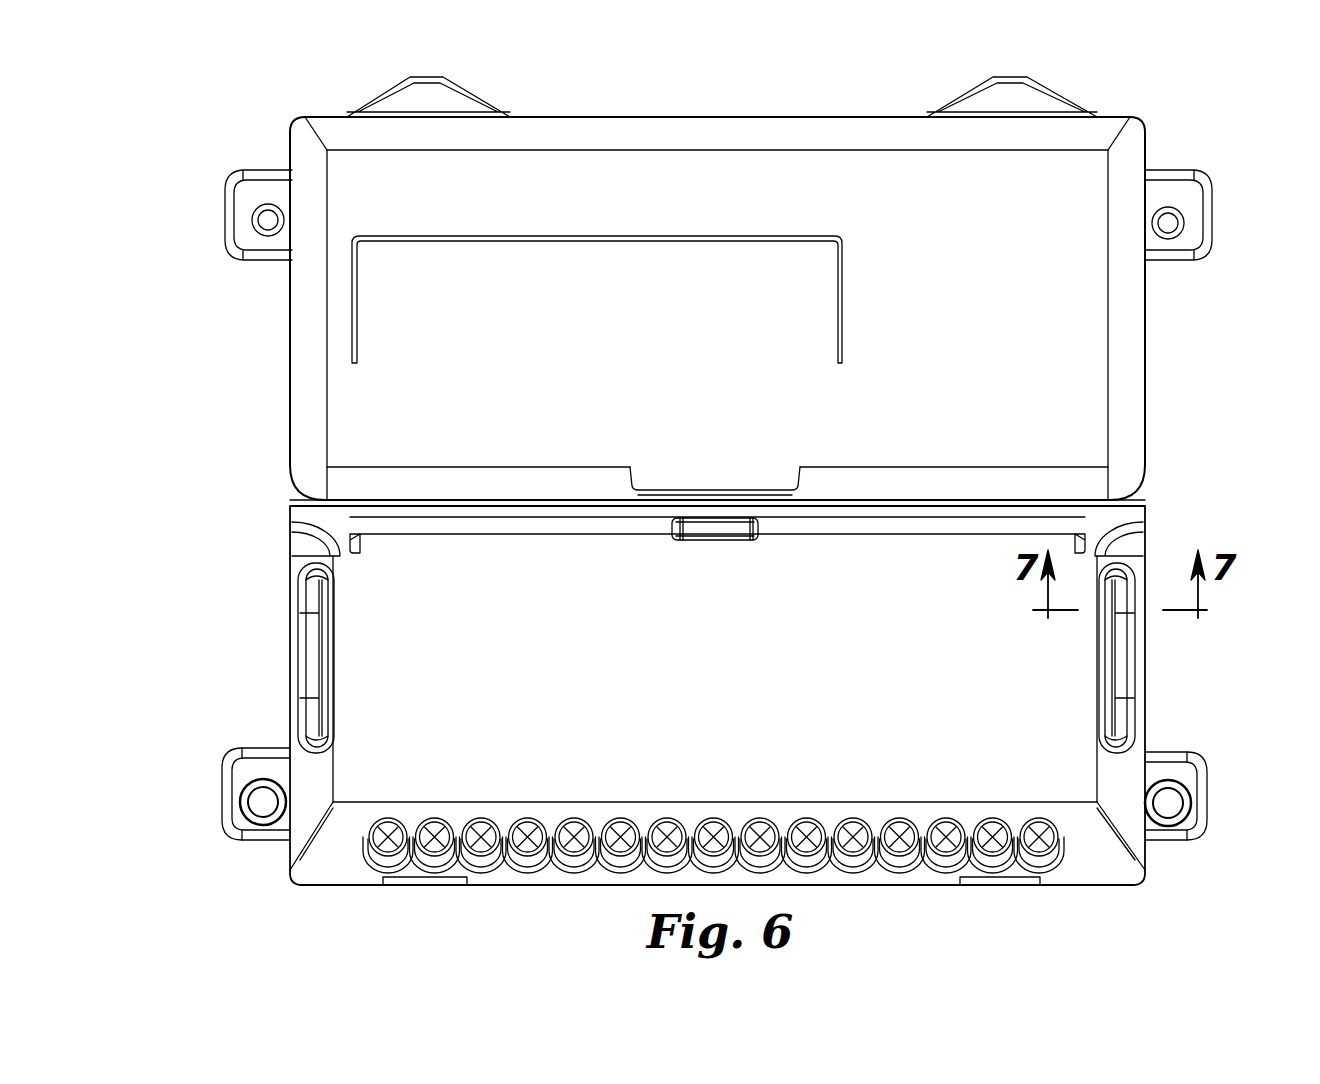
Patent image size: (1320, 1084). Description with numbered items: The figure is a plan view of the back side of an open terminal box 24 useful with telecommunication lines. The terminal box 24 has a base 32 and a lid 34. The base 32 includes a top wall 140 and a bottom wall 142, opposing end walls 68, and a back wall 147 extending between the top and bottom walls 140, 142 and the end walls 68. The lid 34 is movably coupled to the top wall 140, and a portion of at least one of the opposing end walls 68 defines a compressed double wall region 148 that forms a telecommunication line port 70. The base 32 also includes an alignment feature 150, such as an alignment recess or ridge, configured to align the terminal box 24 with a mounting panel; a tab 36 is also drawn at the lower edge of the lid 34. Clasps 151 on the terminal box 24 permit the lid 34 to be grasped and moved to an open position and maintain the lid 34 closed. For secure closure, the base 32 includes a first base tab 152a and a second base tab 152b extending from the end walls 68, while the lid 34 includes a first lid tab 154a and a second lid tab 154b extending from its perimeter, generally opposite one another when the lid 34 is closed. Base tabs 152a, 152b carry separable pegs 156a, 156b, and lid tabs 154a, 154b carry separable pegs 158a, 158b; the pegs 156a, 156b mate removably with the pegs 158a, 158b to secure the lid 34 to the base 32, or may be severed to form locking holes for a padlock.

The terminal box 24 is at (1181, 382).
The base 32 is at (222, 710).
The lid 34 is at (176, 206).
The latch tab 36 is at (706, 493).
The end wall 68 is at (290, 595).
The telecommunication line port 70 is at (269, 642).
The top wall 140 is at (494, 522).
The bottom wall 142 is at (505, 887).
The back wall 147 is at (648, 748).
The compressed double wall region 148 is at (339, 668).
The alignment feature 150 is at (704, 538).
The clasp 151 is at (455, 100).
The first base tab 152a is at (208, 803).
The second base tab 152b is at (1213, 813).
The first lid tab 154a is at (222, 210).
The second lid tab 154b is at (1209, 193).
The separable peg 156a is at (262, 805).
The separable peg 156b is at (1173, 806).
The separable peg 158a is at (262, 226).
The separable peg 158b is at (1178, 228).